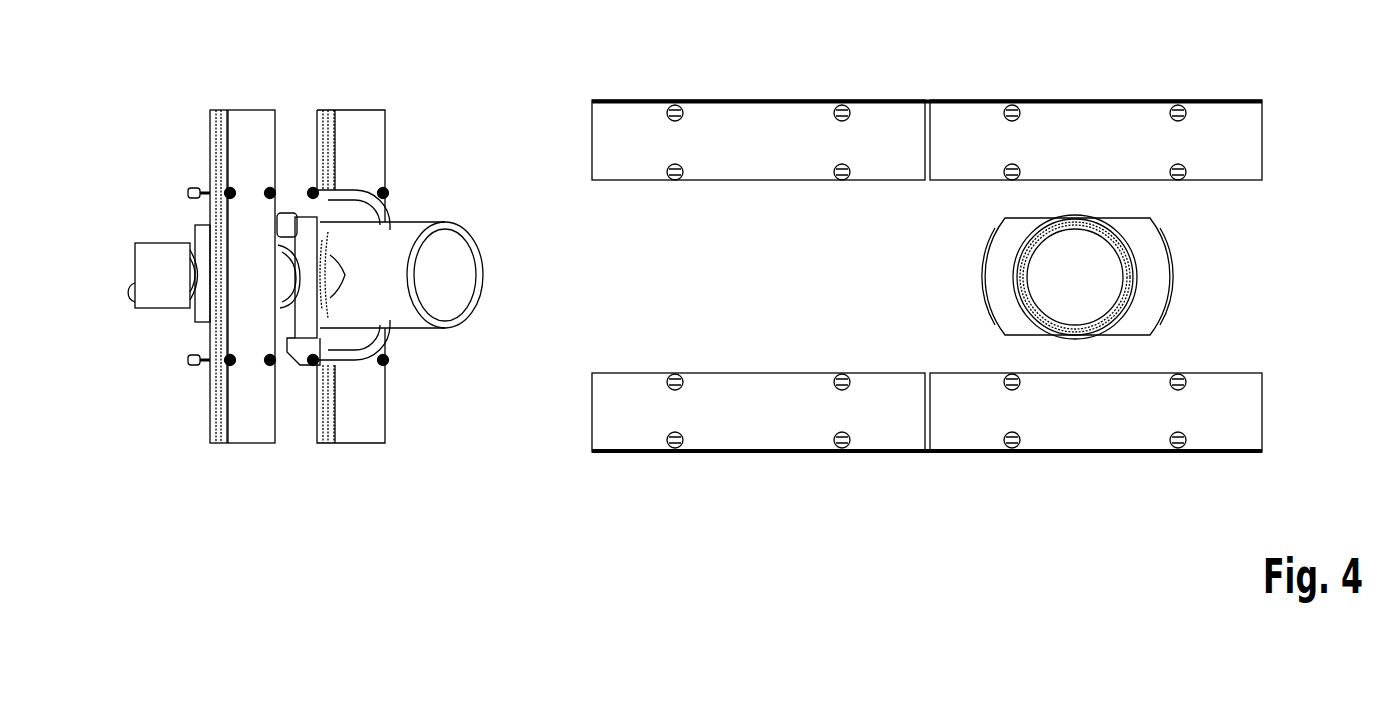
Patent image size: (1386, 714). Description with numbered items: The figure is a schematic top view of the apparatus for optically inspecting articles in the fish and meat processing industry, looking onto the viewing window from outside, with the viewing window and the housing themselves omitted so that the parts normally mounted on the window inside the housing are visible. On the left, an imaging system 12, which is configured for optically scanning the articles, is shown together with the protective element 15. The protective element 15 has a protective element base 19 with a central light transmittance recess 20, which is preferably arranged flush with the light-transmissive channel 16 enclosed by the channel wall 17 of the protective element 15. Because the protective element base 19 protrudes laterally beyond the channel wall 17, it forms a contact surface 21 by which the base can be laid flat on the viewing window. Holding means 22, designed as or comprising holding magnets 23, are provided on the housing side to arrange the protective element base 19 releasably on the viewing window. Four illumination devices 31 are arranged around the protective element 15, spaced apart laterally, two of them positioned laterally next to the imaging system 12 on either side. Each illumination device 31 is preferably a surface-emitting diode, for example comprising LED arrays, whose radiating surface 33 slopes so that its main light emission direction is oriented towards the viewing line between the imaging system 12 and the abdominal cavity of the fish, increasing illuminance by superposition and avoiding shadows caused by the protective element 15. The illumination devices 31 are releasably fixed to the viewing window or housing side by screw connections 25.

The imaging system 12 is at (150, 262).
The protective element 15 is at (408, 345).
The light-transmissive channel 16 is at (455, 275).
The channel wall 17 is at (400, 226).
The protective element base 19 is at (340, 340).
The light transmittance recess 20 is at (352, 335).
The contact surface 21 is at (293, 200).
The holding means 22 is at (202, 245).
The holding magnets 23 is at (262, 220).
The screw connections 25 is at (200, 366).
The illumination device 31 is at (250, 428).
The radiating surface 33 is at (242, 318).